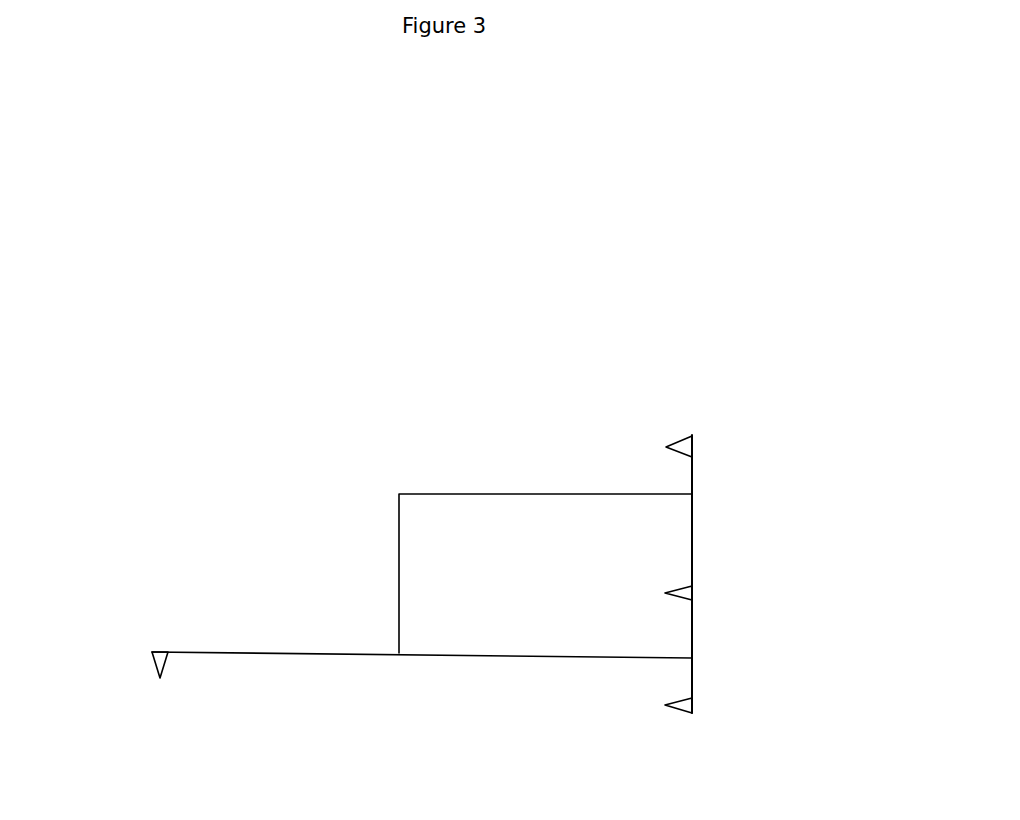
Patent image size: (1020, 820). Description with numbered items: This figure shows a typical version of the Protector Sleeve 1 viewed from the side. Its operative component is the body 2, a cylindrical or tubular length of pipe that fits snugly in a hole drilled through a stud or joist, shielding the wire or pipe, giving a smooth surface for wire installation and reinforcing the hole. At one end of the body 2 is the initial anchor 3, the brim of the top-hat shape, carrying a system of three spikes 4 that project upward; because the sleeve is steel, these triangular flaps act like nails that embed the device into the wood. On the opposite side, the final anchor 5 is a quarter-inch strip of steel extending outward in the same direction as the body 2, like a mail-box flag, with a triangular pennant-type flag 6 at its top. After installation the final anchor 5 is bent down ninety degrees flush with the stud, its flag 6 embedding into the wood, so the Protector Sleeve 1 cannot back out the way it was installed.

The Protector Sleeve 1 is at (322, 368).
The body 2 is at (468, 568).
The initial anchor 3 is at (692, 472).
The spikes 4 is at (692, 445).
The final anchor 5 is at (273, 653).
The triangular flag 6 is at (152, 652).